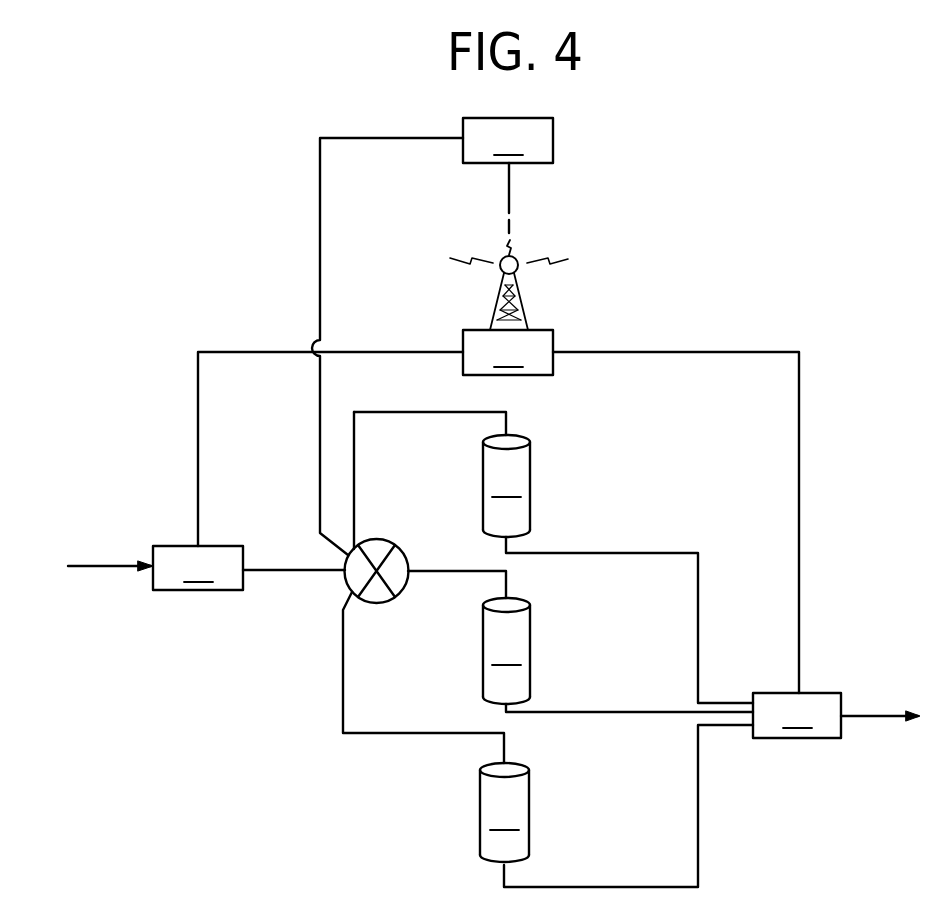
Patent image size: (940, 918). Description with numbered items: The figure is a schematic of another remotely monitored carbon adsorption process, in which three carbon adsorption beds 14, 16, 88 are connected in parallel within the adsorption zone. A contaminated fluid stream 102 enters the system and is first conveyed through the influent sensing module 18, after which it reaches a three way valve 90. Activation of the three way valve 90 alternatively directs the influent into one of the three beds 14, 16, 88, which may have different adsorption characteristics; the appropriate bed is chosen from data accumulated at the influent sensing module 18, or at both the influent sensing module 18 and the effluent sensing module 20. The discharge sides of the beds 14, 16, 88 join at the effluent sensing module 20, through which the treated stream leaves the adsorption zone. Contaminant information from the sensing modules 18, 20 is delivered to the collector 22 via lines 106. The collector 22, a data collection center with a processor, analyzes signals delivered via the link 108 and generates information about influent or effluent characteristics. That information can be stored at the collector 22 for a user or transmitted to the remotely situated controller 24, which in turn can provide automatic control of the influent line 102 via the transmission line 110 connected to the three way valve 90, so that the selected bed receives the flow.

The carbon adsorption bed 14 is at (506, 486).
The carbon adsorption bed 16 is at (506, 651).
The influent sensing module 18 is at (198, 568).
The effluent sensing module 20 is at (797, 715).
The collector 22 is at (509, 315).
The remotely situated controller 24 is at (508, 140).
The carbon adsorption bed 88 is at (504, 812).
The three way valve 90 is at (342, 587).
The contaminated fluid stream 102 is at (110, 568).
The lines 106 is at (199, 495).
The link 108 is at (511, 205).
The transmission line 110 is at (321, 273).